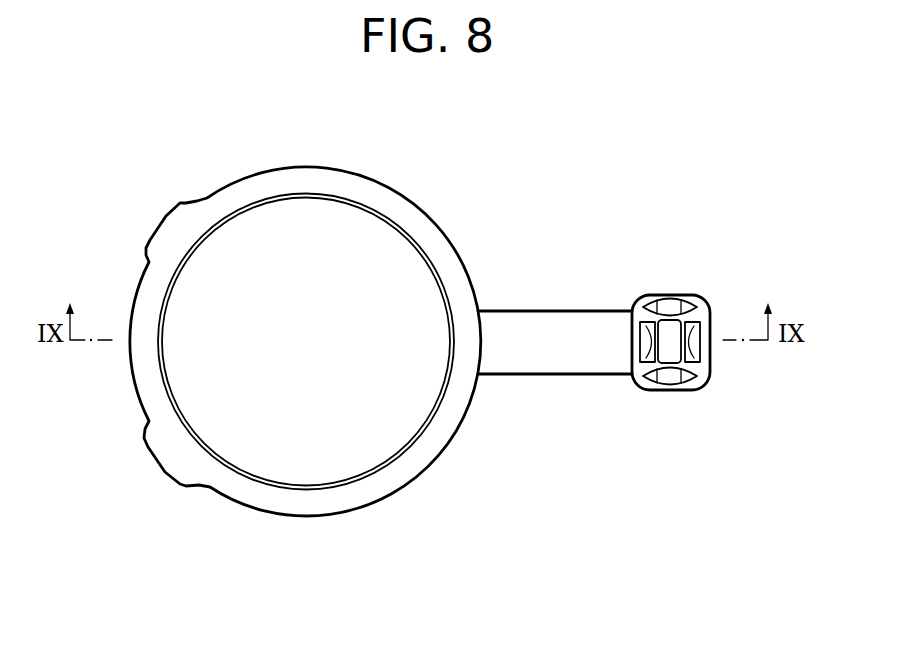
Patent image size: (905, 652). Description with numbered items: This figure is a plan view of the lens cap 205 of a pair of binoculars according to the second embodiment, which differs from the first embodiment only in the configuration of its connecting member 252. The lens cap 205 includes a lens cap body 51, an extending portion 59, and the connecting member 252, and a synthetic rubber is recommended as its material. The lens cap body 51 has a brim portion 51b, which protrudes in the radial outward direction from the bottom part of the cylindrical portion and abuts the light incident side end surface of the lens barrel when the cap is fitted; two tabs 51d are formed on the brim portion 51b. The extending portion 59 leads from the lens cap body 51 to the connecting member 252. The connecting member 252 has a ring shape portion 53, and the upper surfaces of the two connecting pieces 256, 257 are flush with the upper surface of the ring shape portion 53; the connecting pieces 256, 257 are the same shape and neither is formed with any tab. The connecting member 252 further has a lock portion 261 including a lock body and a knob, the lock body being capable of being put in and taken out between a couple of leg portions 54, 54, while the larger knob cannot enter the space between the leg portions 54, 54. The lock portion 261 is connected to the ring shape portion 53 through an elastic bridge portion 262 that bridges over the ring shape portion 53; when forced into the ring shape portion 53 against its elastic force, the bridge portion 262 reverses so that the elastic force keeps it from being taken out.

The lens cap body 51 is at (218, 184).
The lens cap 205 is at (298, 158).
The tab 51d is at (167, 233).
The brim portion 51b is at (300, 505).
The extending portion 59 is at (521, 310).
The connecting member 252 is at (686, 279).
The ring shape portion 53 is at (712, 364).
The lock portion 261 is at (670, 330).
The bridge portion 262 is at (669, 386).
The leg portion 54 is at (652, 342).
The connecting piece 256 is at (648, 388).
The connecting piece 257 is at (694, 388).